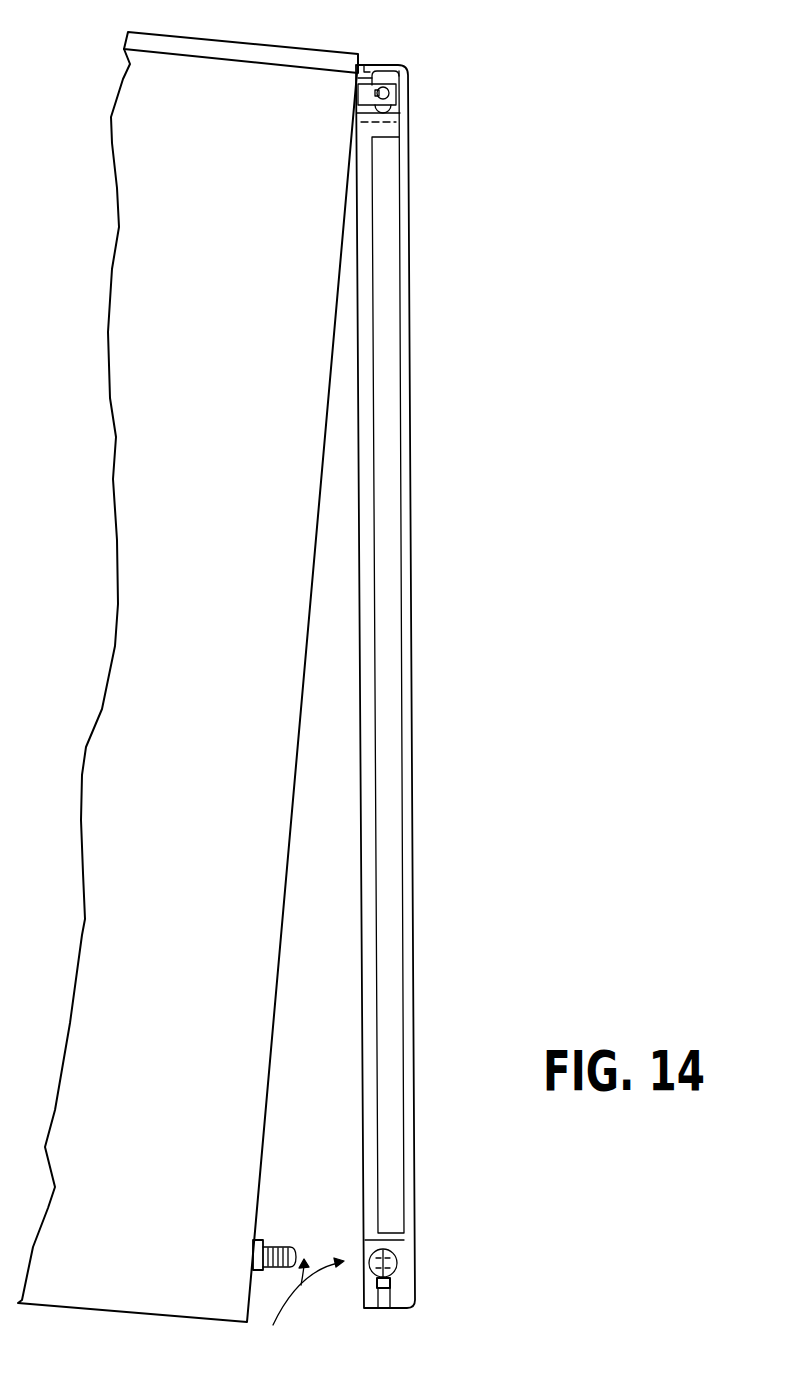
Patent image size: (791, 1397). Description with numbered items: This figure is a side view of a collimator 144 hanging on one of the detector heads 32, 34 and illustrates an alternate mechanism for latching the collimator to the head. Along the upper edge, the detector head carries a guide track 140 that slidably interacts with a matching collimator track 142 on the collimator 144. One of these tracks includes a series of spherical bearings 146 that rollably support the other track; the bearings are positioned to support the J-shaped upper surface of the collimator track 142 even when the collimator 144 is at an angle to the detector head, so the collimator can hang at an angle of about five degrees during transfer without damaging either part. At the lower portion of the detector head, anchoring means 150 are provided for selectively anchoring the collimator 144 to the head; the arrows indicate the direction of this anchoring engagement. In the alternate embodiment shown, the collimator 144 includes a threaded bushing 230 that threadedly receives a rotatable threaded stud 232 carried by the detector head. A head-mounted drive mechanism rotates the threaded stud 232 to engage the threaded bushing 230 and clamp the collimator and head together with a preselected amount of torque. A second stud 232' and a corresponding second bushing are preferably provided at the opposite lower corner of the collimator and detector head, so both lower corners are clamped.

The detector head 32 is at (188, 677).
The detector head 34 is at (188, 677).
The guide track 140 is at (397, 88).
The collimator track 142 is at (385, 75).
The collimator 144 is at (390, 468).
The spherical bearings 146 is at (400, 112).
The anchoring means 150 is at (292, 1308).
The threaded bushing 230 is at (365, 1268).
The threaded stud 232 is at (306, 1219).
The stud 232' is at (306, 1235).